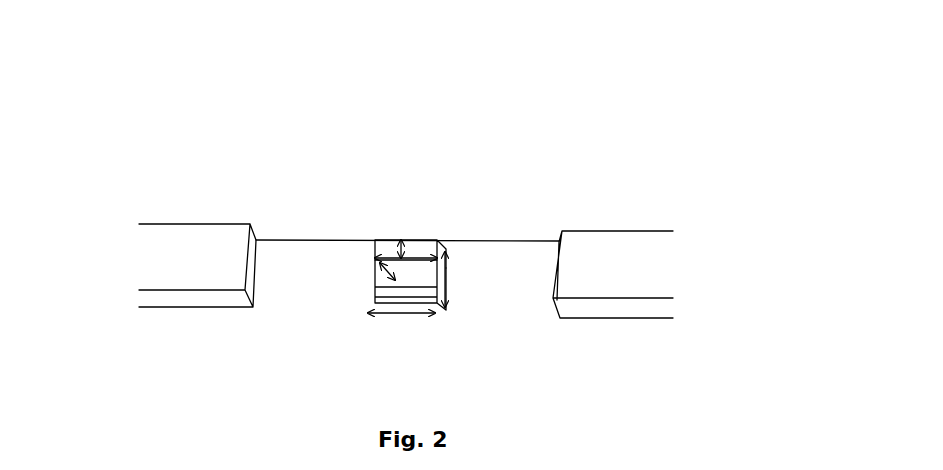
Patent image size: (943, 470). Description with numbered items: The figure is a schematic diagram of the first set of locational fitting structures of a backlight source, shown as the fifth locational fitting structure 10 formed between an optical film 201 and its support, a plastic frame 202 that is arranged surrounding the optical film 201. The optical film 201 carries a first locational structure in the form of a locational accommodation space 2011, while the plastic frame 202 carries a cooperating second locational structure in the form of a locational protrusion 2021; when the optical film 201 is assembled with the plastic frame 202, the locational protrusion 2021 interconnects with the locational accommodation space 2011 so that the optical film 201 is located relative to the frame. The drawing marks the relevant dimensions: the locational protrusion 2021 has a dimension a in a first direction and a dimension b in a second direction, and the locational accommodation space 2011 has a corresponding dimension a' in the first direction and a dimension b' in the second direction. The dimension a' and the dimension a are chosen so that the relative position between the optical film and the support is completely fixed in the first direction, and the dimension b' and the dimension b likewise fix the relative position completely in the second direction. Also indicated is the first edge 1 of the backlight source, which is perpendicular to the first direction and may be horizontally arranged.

The fifth locational fitting structure 10 is at (278, 122).
The first edge 1 is at (552, 260).
The plastic frame 202 is at (215, 252).
The optical film 201 is at (533, 280).
The locational protrusion 2021 is at (410, 258).
The locational accommodation space 2011 is at (372, 296).
The dimension a is at (376, 233).
The dimension b is at (412, 240).
The dimension a' is at (467, 279).
The dimension b' is at (401, 349).